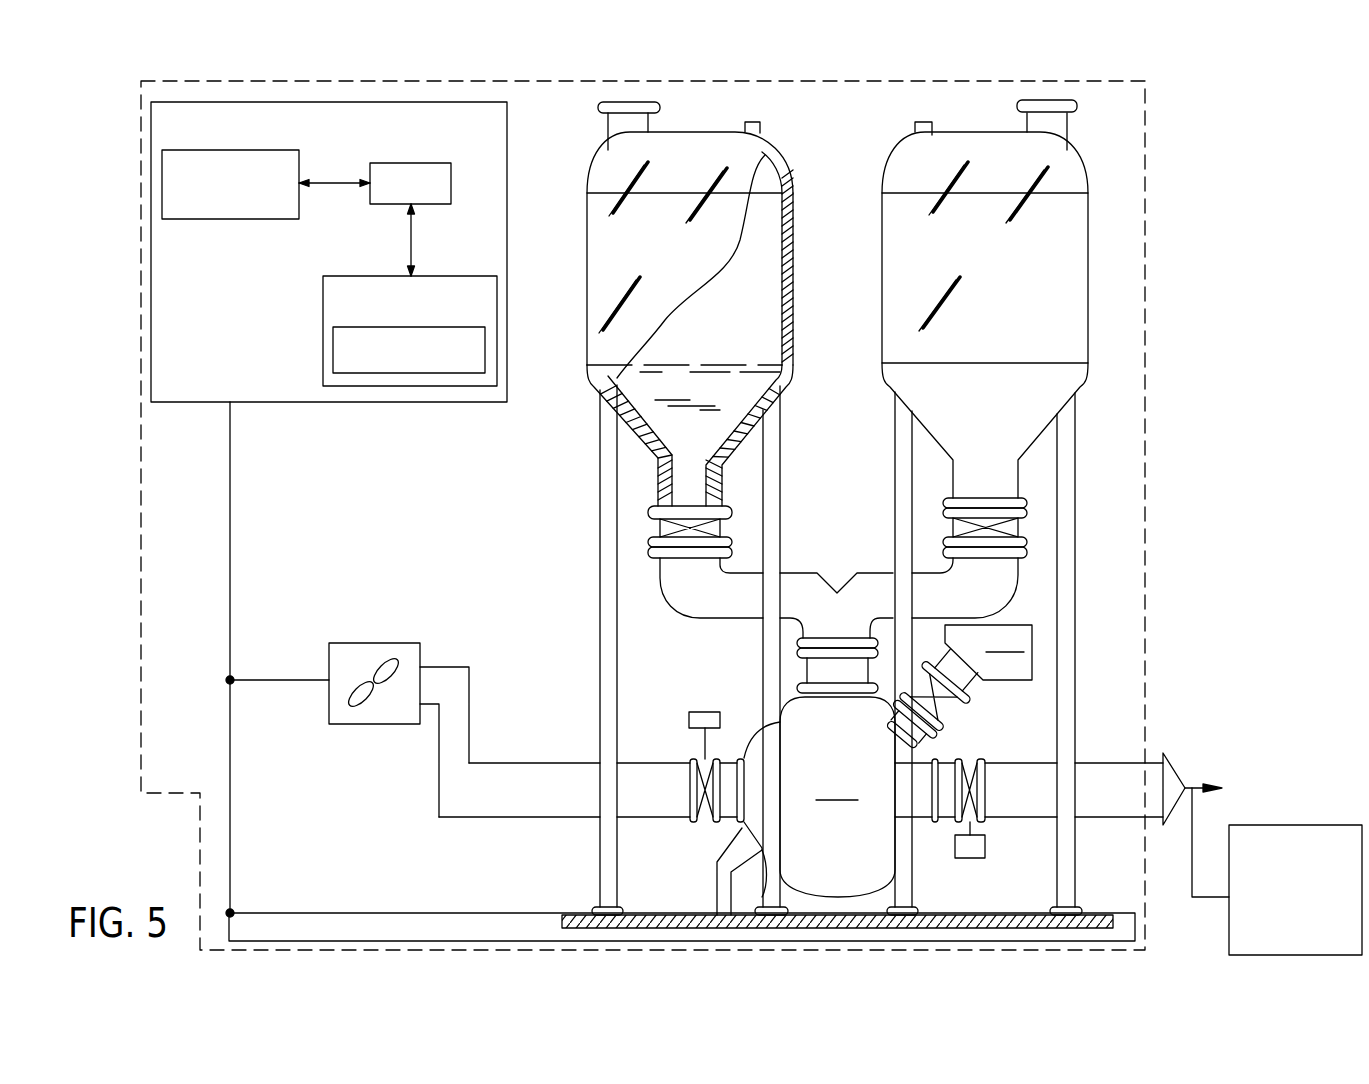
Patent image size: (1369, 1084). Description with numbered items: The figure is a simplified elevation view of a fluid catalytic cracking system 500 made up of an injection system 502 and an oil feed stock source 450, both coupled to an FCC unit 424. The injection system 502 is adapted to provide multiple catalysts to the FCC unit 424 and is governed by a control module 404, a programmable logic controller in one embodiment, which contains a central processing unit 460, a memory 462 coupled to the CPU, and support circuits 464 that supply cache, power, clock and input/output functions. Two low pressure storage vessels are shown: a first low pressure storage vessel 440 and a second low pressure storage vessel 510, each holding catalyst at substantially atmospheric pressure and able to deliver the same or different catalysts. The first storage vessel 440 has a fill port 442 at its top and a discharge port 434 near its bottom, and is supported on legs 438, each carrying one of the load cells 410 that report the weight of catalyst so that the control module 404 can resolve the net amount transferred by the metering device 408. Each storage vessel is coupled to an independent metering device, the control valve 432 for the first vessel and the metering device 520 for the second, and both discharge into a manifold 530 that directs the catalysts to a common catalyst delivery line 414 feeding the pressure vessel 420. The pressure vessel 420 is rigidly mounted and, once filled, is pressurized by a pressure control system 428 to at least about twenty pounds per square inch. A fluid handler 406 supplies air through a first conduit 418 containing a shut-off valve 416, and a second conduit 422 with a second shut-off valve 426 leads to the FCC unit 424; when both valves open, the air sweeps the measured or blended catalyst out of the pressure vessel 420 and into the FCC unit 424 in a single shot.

The fluid catalytic cracking system 500 is at (1195, 132).
The injection system 502 is at (173, 793).
The control module 404 is at (329, 284).
The fluid handler 406 is at (402, 643).
The metering device 408 is at (647, 508).
The load cells 410 is at (716, 863).
The common catalyst delivery line 414 is at (806, 672).
The shut-off valve 416 is at (703, 712).
The first conduit 418 is at (664, 820).
The pressure vessel 420 is at (837, 797).
The second conduit 422 is at (992, 822).
The FCC unit 424 is at (1139, 773).
The second shut-off valve 426 is at (968, 762).
The pressure control system 428 is at (954, 691).
The control valve 432 is at (723, 525).
The discharge port 434 is at (723, 502).
The legs 438 is at (770, 432).
The first low pressure storage vessel 440 is at (733, 248).
The fill port 442 is at (661, 106).
The oil feed stock source 450 is at (1229, 915).
The central processing unit 460 is at (418, 163).
The memory 462 is at (323, 330).
The support circuits 464 is at (230, 219).
The second low pressure storage vessel 510 is at (1092, 263).
The metering device 520 is at (1015, 527).
The manifold 530 is at (872, 572).